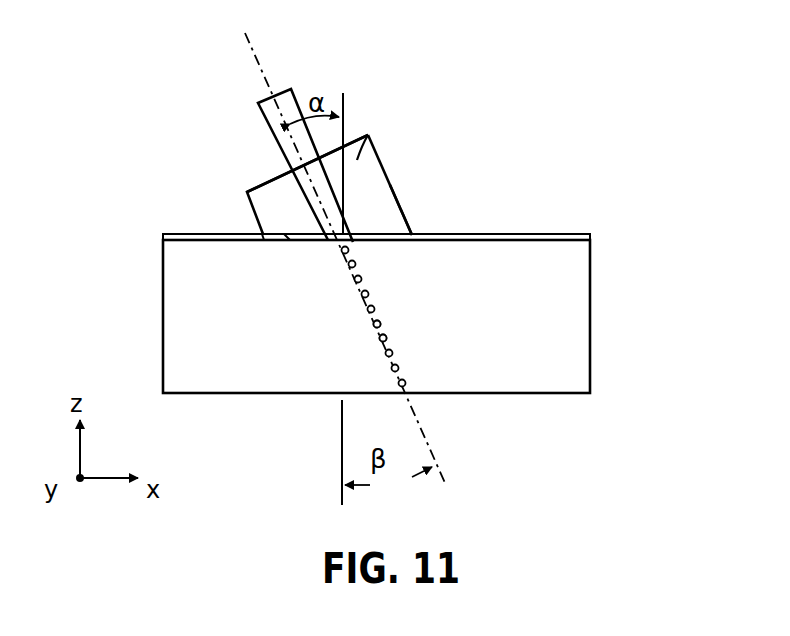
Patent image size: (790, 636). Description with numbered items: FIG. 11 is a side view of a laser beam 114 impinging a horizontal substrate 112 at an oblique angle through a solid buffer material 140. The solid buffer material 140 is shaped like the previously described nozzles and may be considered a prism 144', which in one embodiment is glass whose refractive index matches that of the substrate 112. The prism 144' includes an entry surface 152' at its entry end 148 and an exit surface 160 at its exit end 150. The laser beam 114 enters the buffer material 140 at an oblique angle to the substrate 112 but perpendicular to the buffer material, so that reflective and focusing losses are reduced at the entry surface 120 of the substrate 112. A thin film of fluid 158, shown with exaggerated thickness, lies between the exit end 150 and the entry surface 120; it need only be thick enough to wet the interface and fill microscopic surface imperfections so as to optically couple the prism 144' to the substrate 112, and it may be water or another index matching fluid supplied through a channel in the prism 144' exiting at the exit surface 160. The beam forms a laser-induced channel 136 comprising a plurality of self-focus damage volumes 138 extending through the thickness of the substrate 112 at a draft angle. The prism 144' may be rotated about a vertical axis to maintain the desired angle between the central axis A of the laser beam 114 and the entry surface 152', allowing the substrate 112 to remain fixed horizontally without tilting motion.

The substrate 112 is at (590, 277).
The entry surface 120 is at (577, 237).
The thin film of fluid 158 is at (520, 235).
The laser beam 114 is at (257, 108).
The entry end 148 is at (243, 199).
The entry surface 152' is at (257, 154).
The buffer material 140 is at (368, 135).
The prism 144' is at (450, 210).
The laser-induced channel 136 is at (388, 383).
The self-focus damage volumes 138 is at (385, 334).
The exit end 150 is at (262, 235).
The exit surface 160 is at (287, 236).
The central axis A is at (263, 70).